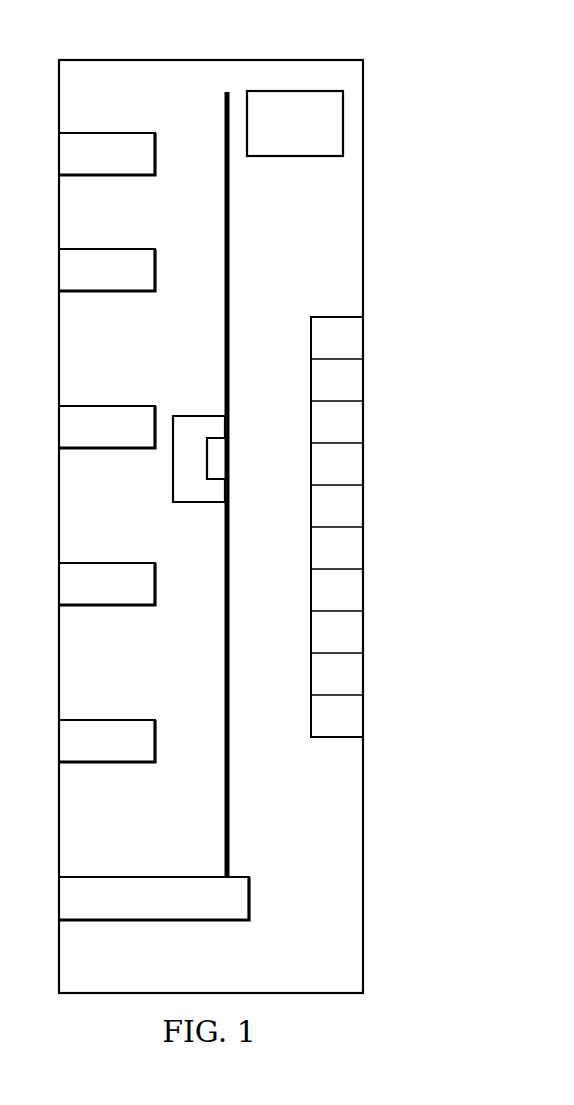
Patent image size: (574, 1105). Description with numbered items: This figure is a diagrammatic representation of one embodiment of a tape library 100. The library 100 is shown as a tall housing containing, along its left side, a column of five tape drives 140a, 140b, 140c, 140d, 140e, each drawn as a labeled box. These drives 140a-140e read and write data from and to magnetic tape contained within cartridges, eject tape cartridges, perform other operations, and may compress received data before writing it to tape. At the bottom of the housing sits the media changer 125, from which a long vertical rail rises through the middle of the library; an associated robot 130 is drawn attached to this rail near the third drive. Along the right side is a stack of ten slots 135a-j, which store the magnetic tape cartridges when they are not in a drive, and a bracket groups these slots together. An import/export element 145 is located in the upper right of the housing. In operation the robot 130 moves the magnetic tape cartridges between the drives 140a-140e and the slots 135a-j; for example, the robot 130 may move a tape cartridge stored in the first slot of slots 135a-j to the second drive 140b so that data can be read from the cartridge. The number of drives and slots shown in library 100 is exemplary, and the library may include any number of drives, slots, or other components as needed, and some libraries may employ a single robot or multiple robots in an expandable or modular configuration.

The tape library 100 is at (285, 59).
The media changer 125 is at (153, 921).
The robot 130 is at (197, 415).
The slots 135a-j is at (379, 312).
The drive 140a is at (106, 132).
The drive 140b is at (106, 248).
The drive 140c is at (106, 405).
The drive 140d is at (106, 606).
The drive 140e is at (106, 763).
The import/export element 145 is at (295, 157).